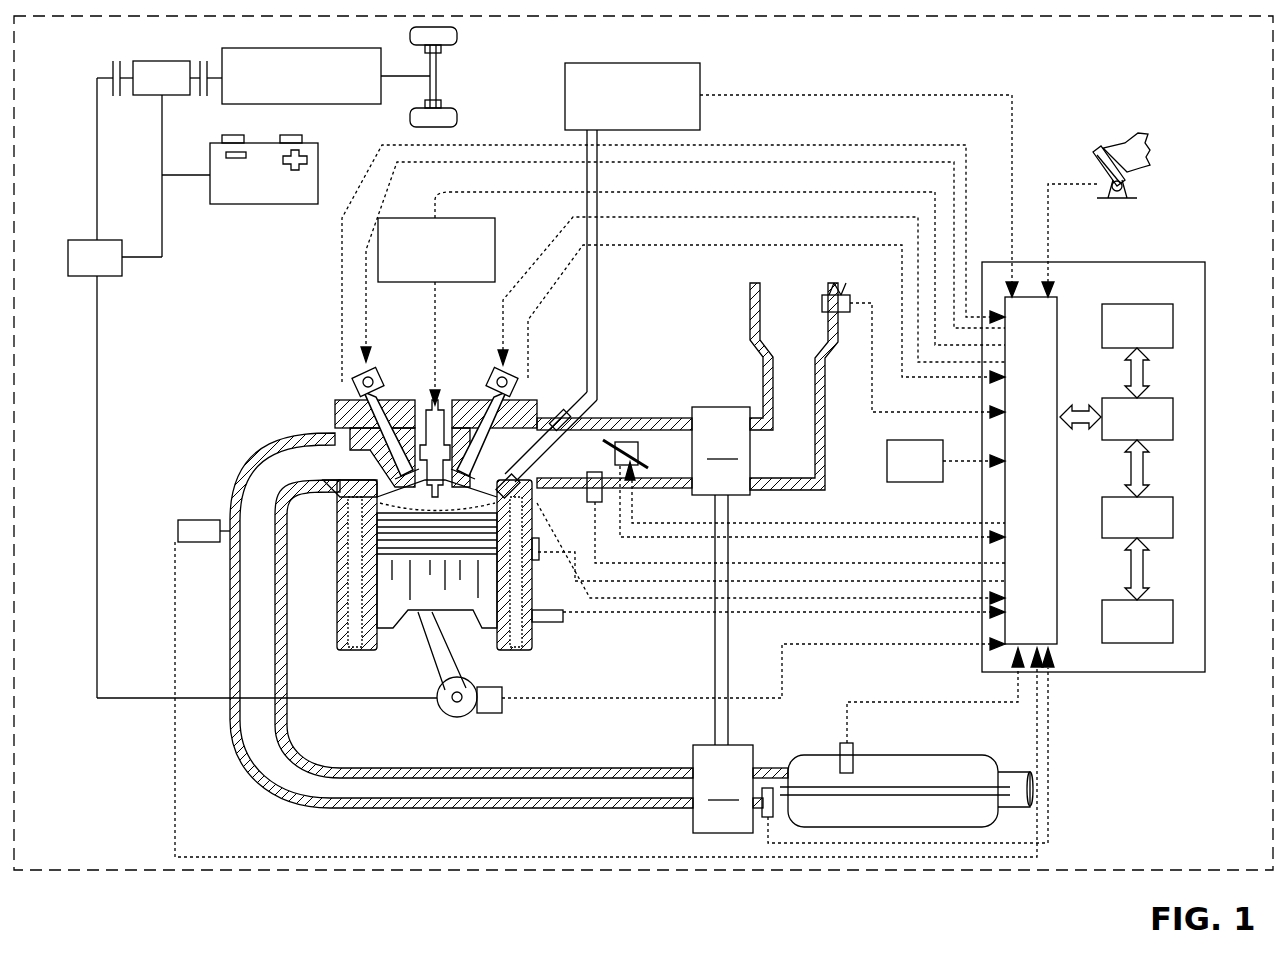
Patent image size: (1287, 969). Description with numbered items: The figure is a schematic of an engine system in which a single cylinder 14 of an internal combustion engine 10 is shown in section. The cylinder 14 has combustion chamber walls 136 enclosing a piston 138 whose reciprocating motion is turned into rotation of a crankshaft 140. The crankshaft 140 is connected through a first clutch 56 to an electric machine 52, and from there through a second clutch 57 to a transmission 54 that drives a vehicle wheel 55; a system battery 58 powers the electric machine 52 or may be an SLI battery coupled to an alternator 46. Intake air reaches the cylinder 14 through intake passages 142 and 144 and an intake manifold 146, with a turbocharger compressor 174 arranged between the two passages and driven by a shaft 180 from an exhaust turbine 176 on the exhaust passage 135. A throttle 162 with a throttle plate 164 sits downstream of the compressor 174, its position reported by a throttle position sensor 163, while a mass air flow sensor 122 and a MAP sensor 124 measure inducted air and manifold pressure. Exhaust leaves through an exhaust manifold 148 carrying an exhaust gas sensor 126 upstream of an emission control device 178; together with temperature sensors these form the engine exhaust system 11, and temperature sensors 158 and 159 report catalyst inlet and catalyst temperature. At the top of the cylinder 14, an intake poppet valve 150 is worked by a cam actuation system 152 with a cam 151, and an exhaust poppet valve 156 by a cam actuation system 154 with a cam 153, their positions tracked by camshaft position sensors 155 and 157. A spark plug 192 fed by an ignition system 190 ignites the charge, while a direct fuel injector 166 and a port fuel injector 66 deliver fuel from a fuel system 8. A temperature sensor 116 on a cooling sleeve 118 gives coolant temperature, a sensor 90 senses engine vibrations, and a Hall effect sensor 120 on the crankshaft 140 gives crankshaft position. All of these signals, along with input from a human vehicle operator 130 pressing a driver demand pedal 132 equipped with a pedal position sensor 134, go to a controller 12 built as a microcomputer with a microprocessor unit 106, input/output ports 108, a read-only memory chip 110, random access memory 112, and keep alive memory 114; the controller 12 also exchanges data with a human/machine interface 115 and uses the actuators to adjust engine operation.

The fuel system 8 is at (665, 63).
The internal combustion engine 10 is at (272, 356).
The engine exhaust system 11 is at (225, 477).
The controller 12 is at (1133, 454).
The cylinder 14 is at (410, 503).
The alternator 46 is at (68, 276).
The electric machine 52 is at (150, 61).
The transmission 54 is at (356, 104).
The vehicle wheel 55 is at (410, 36).
The first clutch 56 is at (113, 64).
The second clutch 57 is at (200, 63).
The system battery 58 is at (262, 204).
The port fuel injector 66 is at (556, 415).
The sensor 90 is at (545, 622).
The microprocessor unit 106 is at (1190, 410).
The input/output ports 108 is at (1057, 298).
The read-only memory chip 110 is at (1190, 322).
The random access memory 112 is at (1190, 517).
The keep alive memory 114 is at (1190, 623).
The human/machine interface 115 is at (938, 461).
The temperature sensor 116 is at (540, 560).
The cooling sleeve 118 is at (530, 622).
The Hall effect sensor 120 is at (492, 713).
The mass air flow sensor 122 is at (840, 295).
The MAP sensor 124 is at (596, 502).
The exhaust gas sensor 126 is at (178, 524).
The human vehicle operator 130 is at (1137, 156).
The driver demand pedal 132 is at (1095, 160).
The pedal position sensor 134 is at (1124, 186).
The exhaust passage 135 is at (606, 768).
The combustion chamber walls 136 is at (376, 650).
The piston 138 is at (418, 600).
The crankshaft 140 is at (445, 715).
The intake passage 142 is at (810, 331).
The intake passage 144 is at (686, 465).
The intake manifold 146 is at (600, 465).
The exhaust manifold 148 is at (325, 473).
The intake poppet valve 150 is at (470, 430).
The cam 151 is at (498, 375).
The cam actuation system 152 is at (484, 387).
The cam 153 is at (378, 380).
The cam actuation system 154 is at (391, 387).
The camshaft position sensor 155 is at (512, 392).
The exhaust poppet valve 156 is at (360, 440).
The camshaft position sensor 157 is at (356, 380).
The temperature sensor 158 is at (766, 817).
The temperature sensor 159 is at (853, 745).
The throttle 162 is at (639, 429).
The throttle position sensor 163 is at (632, 480).
The throttle plate 164 is at (620, 442).
The direct fuel injector 166 is at (500, 484).
The compressor 174 is at (721, 451).
The exhaust turbine 176 is at (723, 789).
The emission control device 178 is at (955, 755).
The shaft 180 is at (730, 712).
The ignition system 190 is at (388, 218).
The spark plug 192 is at (425, 440).